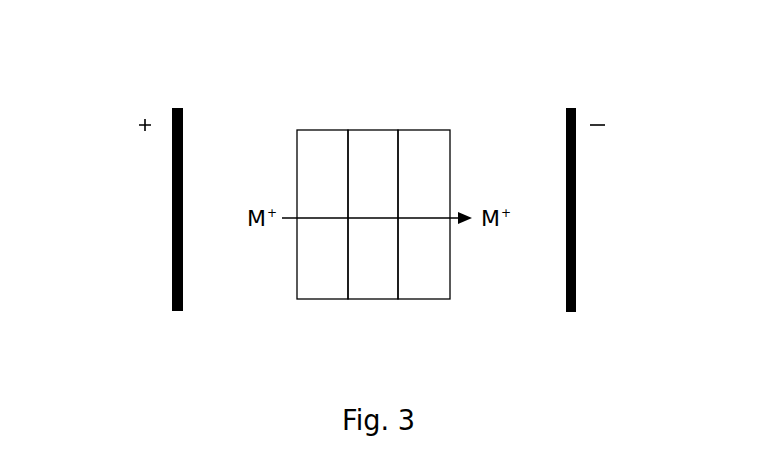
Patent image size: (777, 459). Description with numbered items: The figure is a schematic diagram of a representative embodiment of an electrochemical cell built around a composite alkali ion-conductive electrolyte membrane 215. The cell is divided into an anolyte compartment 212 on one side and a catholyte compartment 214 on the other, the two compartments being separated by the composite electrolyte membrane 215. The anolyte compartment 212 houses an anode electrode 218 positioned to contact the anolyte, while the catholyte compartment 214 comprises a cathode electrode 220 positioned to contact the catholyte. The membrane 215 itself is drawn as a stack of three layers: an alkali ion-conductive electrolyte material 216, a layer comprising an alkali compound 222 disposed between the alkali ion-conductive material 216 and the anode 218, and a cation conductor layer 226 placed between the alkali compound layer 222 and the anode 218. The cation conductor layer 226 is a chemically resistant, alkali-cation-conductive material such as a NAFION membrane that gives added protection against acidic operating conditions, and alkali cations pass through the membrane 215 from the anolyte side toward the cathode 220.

The anolyte compartment 212 is at (257, 291).
The catholyte compartment 214 is at (526, 291).
The composite alkali ion-conductive electrolyte membrane 215 is at (373, 195).
The alkali ion-conductive electrolyte material 216 is at (420, 130).
The anode electrode 218 is at (172, 187).
The cathode electrode 220 is at (577, 183).
The alkali compound layer 222 is at (372, 130).
The cation conductor layer 226 is at (319, 130).